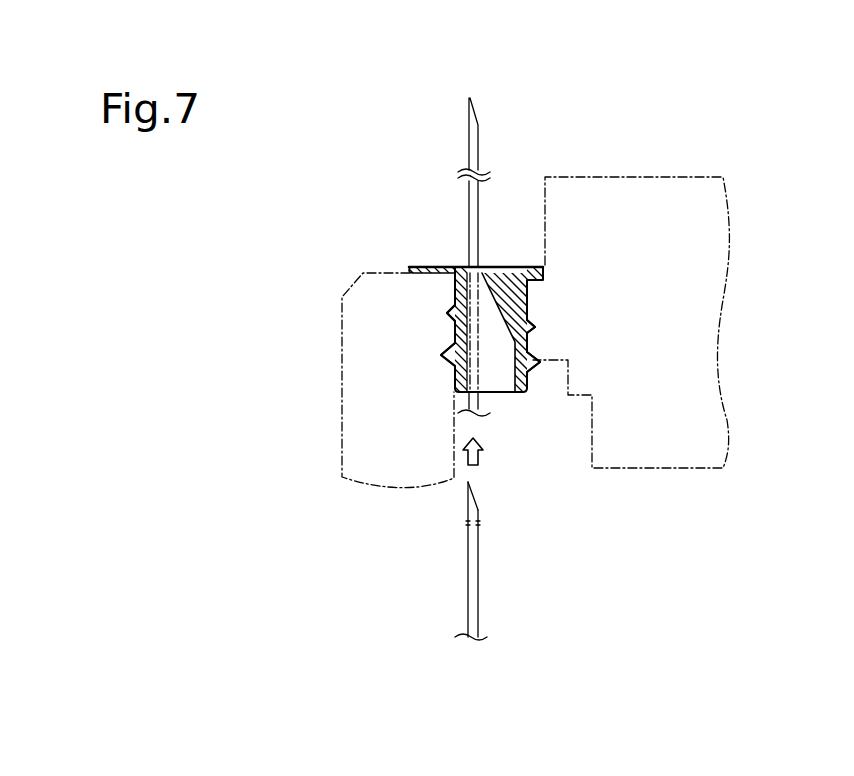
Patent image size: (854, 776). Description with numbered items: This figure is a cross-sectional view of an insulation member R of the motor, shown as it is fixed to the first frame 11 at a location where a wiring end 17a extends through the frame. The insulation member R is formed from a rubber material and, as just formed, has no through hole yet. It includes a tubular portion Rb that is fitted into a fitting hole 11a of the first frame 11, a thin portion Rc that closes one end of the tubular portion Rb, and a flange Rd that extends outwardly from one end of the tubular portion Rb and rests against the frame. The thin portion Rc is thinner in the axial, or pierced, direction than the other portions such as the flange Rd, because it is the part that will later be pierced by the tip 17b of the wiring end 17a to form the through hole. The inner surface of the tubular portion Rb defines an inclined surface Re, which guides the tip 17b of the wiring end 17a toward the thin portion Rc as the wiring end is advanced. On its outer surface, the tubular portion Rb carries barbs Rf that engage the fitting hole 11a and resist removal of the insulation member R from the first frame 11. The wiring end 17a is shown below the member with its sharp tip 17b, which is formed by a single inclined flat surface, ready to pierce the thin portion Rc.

The first frame 11 is at (637, 177).
The fitting hole 11a is at (454, 307).
The insulation member R is at (508, 265).
The tubular portion Rb is at (448, 348).
The thin portion Rc is at (471, 264).
The flange Rd is at (425, 266).
The inclined surface Re is at (491, 315).
The barbs Rf is at (540, 358).
The wiring end 17a is at (467, 600).
The tip 17b is at (480, 492).